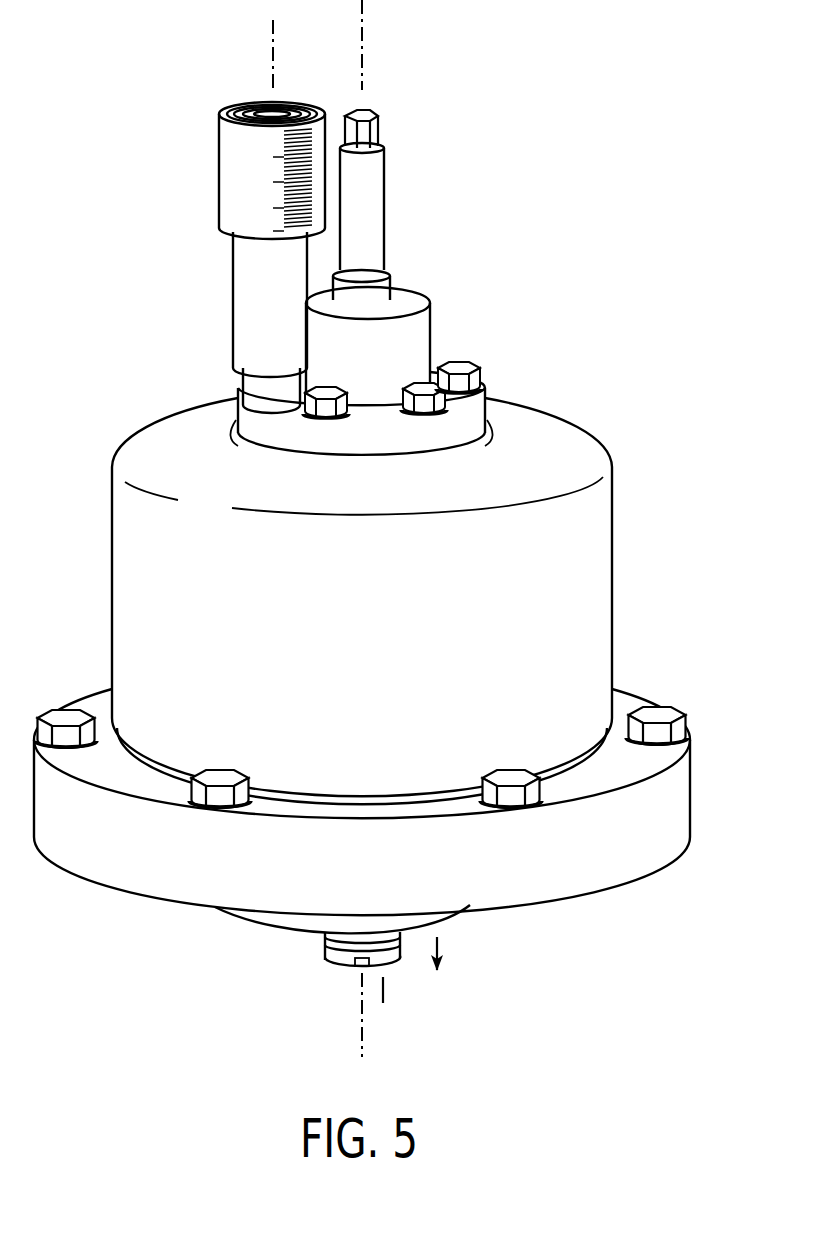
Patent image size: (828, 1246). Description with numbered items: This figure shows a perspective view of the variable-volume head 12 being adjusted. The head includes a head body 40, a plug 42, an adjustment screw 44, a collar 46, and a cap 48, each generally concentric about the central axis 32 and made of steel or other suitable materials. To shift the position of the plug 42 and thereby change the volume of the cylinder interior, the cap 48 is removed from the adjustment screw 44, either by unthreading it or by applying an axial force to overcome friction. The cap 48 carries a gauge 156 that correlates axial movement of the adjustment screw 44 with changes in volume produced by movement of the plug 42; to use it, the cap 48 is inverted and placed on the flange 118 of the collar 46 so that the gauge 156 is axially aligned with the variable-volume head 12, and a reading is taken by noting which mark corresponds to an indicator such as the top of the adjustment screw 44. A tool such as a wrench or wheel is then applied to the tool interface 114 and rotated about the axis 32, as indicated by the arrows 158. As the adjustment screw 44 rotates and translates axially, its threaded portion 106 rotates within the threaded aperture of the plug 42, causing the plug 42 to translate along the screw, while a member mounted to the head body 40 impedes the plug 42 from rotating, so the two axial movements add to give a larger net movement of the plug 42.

The variable-volume head 12 is at (619, 131).
The central axis 32 is at (365, 46).
The head body 40 is at (594, 672).
The plug 42 is at (455, 921).
The adjustment screw 44 is at (366, 178).
The collar 46 is at (428, 300).
The cap 48 is at (233, 303).
The threaded portion 106 is at (324, 952).
The tool interface 114 is at (368, 136).
The flange 118 is at (468, 400).
The gauge 156 is at (272, 145).
The arrows 158 is at (330, 191).